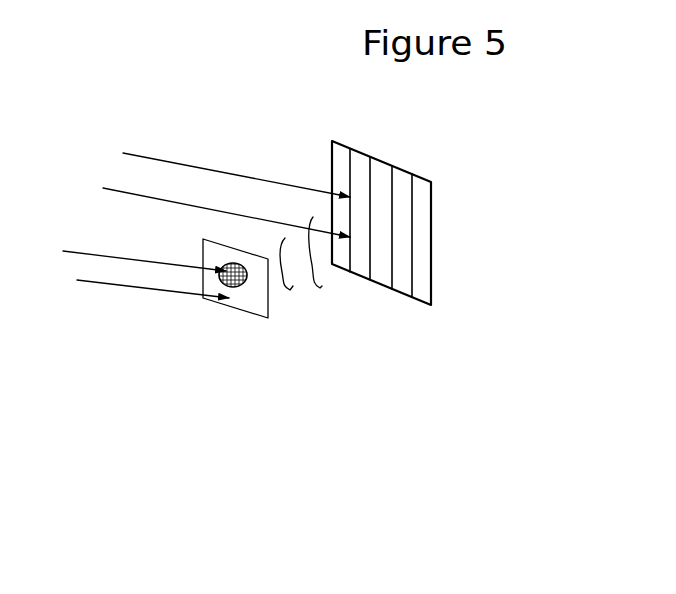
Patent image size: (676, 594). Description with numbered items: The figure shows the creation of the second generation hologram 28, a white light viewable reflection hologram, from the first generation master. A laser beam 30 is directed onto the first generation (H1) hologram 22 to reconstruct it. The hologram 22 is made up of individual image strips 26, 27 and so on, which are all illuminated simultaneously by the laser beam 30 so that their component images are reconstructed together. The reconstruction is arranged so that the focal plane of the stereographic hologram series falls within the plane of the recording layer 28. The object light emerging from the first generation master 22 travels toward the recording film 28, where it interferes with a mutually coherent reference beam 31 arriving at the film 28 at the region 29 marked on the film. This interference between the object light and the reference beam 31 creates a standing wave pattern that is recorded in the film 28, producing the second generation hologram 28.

The first generation hologram 22 is at (438, 205).
The image strip 26 is at (428, 303).
The image strip 27 is at (403, 300).
The second generation hologram 28 is at (253, 317).
The target spot 29 is at (245, 282).
The laser beam 30 is at (188, 167).
The reference beam 31 is at (107, 253).